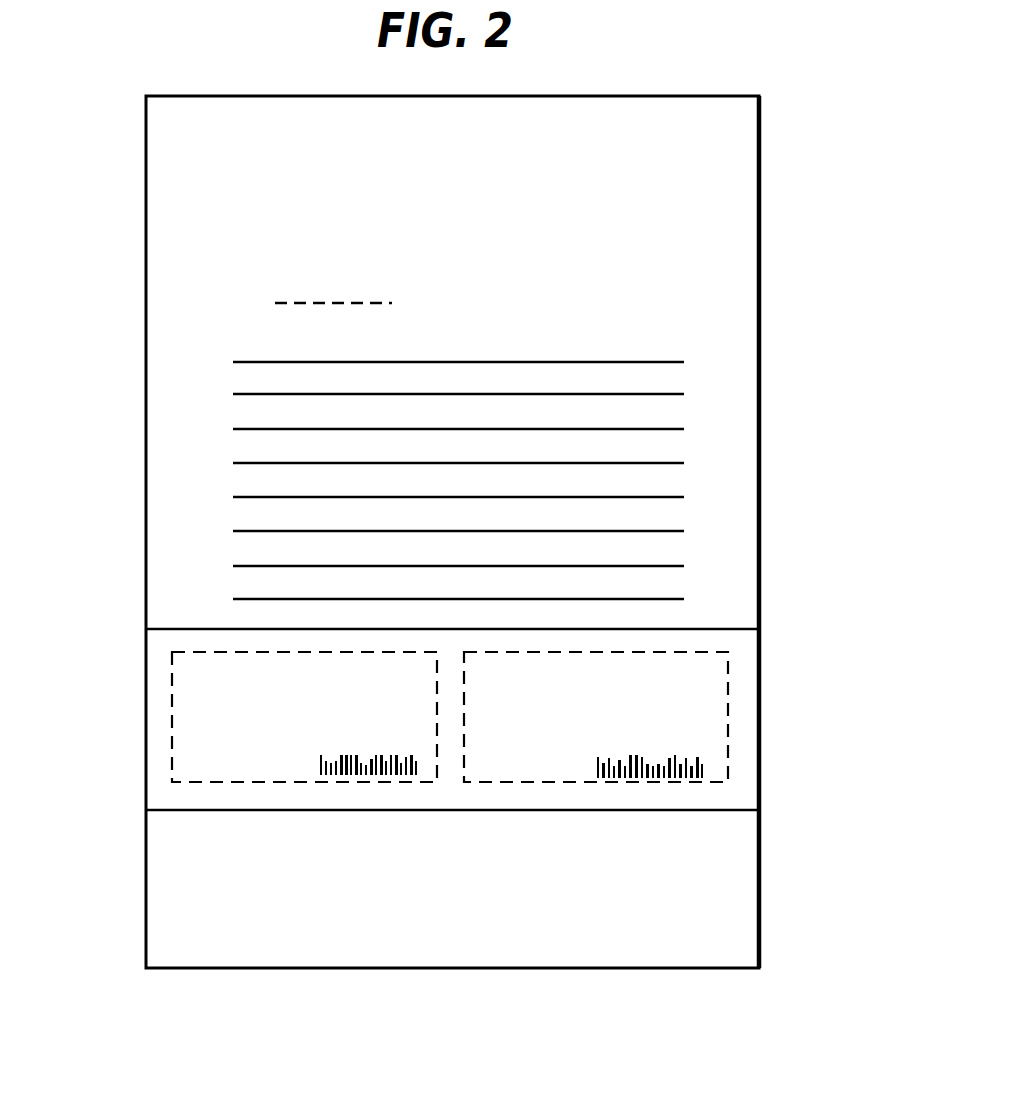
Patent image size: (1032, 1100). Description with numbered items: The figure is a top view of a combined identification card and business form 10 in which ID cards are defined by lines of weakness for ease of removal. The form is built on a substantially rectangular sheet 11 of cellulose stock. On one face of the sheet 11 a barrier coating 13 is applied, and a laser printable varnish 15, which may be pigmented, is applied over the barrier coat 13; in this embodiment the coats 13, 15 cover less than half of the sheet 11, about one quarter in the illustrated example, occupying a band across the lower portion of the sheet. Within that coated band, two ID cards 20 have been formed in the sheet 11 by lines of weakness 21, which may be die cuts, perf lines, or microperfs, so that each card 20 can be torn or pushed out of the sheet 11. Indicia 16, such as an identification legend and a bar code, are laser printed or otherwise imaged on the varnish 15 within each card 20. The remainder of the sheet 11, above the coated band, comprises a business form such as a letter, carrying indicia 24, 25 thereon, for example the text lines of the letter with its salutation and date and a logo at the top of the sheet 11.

The combined identification card and business form 10 is at (850, 260).
The sheet 11 is at (745, 524).
The barrier coating 13 is at (395, 809).
The laser printable varnish 15 is at (177, 798).
The indicia 16 is at (367, 755).
The ID cards 20 is at (205, 727).
The lines of weakness 21 is at (180, 650).
The indicia 24 is at (212, 354).
The indicia 25 is at (500, 127).